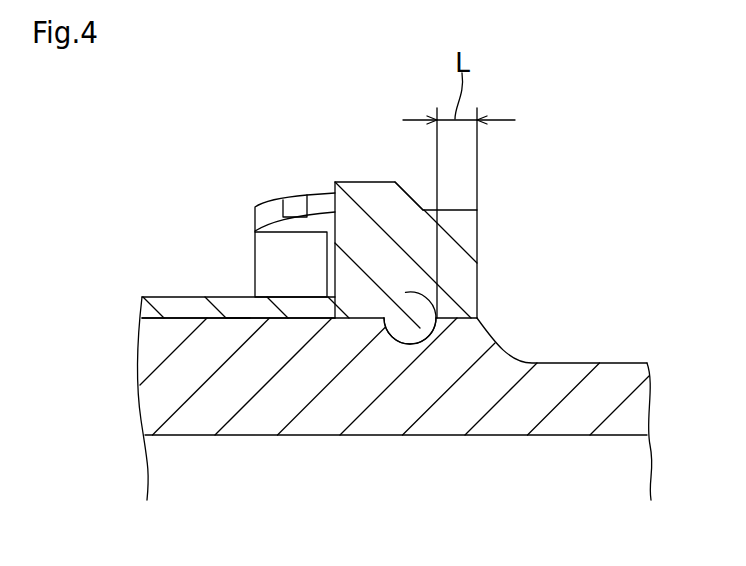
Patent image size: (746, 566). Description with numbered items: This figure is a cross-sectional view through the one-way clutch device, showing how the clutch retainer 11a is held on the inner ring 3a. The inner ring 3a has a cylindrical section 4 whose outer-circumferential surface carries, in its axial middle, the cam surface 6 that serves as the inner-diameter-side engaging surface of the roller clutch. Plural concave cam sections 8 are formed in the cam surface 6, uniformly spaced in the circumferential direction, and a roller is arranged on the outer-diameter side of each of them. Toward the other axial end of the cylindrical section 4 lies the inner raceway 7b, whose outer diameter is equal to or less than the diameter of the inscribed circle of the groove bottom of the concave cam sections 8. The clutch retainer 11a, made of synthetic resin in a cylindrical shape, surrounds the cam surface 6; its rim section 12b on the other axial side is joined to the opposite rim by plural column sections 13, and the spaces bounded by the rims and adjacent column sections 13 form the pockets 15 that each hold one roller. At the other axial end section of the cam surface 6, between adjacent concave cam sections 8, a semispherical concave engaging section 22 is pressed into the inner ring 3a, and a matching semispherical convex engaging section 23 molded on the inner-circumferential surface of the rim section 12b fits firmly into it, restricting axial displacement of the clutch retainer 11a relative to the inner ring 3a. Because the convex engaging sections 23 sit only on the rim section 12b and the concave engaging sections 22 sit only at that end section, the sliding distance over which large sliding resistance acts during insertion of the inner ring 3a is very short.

The inner ring 3a is at (257, 411).
The cylindrical section 4 is at (455, 410).
The cam surface 6 is at (237, 316).
The inner raceway 7b is at (605, 363).
The concave cam section 8 is at (206, 316).
The clutch retainer 11a is at (458, 243).
The rim section 12b is at (397, 230).
The column section 13 is at (167, 305).
The pocket 15 is at (327, 263).
The concave engaging section 22 is at (432, 296).
The convex engaging section 23 is at (402, 322).